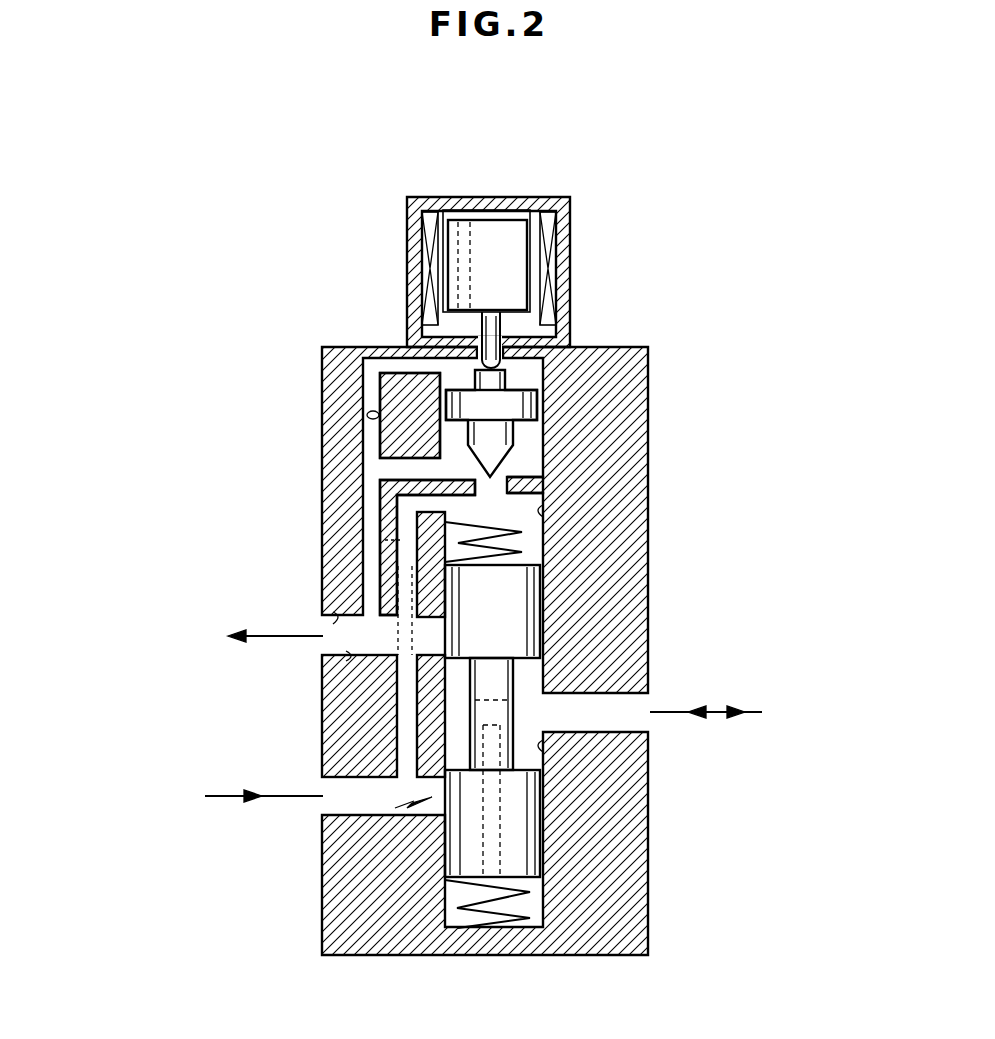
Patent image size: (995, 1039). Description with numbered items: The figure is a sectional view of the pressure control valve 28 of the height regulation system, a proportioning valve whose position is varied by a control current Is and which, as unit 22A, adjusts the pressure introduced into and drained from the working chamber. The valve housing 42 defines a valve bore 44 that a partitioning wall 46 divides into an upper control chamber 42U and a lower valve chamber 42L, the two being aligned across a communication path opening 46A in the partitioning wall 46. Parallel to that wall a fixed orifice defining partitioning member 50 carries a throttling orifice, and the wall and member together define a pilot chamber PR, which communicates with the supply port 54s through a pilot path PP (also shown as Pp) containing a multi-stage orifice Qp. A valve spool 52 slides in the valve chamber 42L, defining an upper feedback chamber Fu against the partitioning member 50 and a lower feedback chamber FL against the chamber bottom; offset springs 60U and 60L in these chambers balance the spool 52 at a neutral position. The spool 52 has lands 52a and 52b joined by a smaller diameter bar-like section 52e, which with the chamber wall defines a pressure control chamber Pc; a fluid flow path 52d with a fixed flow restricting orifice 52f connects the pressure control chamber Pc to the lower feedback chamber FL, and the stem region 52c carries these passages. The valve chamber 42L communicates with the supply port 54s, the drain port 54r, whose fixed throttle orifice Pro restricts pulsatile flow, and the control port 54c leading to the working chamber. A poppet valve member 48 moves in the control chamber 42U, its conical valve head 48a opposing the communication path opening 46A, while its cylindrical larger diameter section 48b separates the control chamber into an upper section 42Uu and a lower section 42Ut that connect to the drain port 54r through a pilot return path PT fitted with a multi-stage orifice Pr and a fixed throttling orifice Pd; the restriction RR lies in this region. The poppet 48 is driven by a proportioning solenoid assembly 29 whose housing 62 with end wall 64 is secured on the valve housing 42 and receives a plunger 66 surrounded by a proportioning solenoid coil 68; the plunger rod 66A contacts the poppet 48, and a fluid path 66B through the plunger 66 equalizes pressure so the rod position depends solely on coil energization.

The pressure control valve 22A is at (650, 527).
The pressure control valve 28 is at (695, 291).
The proportioning solenoid assembly 29 is at (577, 262).
The valve housing 42 is at (374, 932).
The control chamber 42U is at (543, 402).
The lower section of control chamber 42Ut is at (440, 442).
The upper section of control chamber 42Uu is at (407, 343).
The valve chamber 42L is at (447, 538).
The valve bore 44 is at (545, 757).
The partitioning wall 46 is at (513, 442).
The communication path opening 46A is at (538, 408).
The poppet valve member 48 is at (607, 347).
The valve head 48a is at (425, 487).
The cylindrical larger diameter section 48b is at (528, 388).
The fixed orifice defining partitioning member 50 is at (545, 540).
The valve spool 52 is at (489, 774).
The land 52a is at (542, 822).
The land 52b is at (545, 592).
The spool stem 52c is at (545, 662).
The fluid flow path 52d is at (545, 862).
The bar-like section 52e is at (547, 708).
The fixed flow restricting orifice 52f is at (497, 823).
The control port 54c is at (636, 698).
The drain port 54r is at (335, 645).
The supply port 54s is at (332, 805).
The offset spring 60L is at (472, 912).
The offset spring 60U is at (482, 545).
The housing 62 is at (543, 200).
The solenoid housing 64 is at (570, 306).
The plunger 66 is at (503, 228).
The plunger rod 66A is at (490, 312).
The fluid path 66B is at (458, 225).
The proportioning solenoid coil 68 is at (408, 211).
The control current Is is at (408, 267).
The lower feedback chamber FL is at (538, 925).
The upper feedback chamber Fu is at (548, 566).
The pilot chamber PR is at (547, 498).
The pilot return path PT is at (372, 520).
The pilot path PP is at (410, 745).
The pressure control chamber Pc is at (548, 790).
The fixed throttling orifice Pd is at (378, 440).
The multi-stage orifice Pr is at (375, 540).
The fixed throttle orifice Pro is at (348, 628).
The pilot path Pp is at (490, 509).
The multi-stage orifice Qp is at (408, 582).
The restriction RR is at (366, 395).